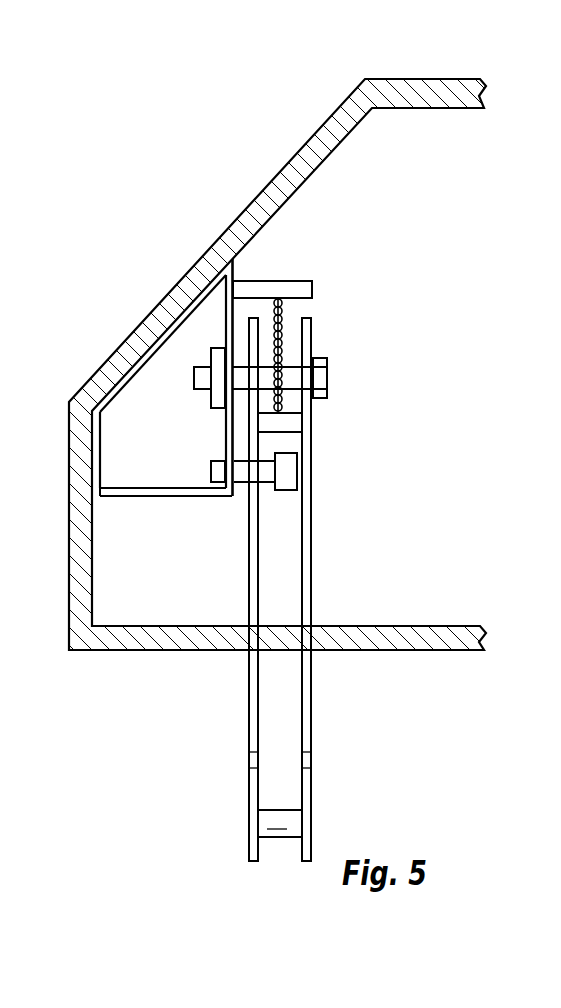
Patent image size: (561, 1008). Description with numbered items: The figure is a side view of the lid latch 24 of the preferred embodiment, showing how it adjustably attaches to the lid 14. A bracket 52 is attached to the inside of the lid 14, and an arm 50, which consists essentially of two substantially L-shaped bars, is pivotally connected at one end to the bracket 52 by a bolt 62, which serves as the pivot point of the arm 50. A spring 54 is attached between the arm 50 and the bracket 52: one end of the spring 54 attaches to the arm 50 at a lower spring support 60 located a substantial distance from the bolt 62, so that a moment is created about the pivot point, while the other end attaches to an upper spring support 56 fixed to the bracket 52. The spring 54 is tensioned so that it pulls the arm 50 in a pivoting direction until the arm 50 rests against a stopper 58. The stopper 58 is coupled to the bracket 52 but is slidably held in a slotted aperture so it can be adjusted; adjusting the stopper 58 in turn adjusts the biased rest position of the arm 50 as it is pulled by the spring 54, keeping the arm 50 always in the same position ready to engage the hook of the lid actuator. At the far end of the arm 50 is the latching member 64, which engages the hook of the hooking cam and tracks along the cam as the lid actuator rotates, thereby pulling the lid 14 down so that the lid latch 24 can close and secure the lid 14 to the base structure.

The lid 14 is at (440, 632).
The lid latch 24 is at (381, 207).
The arm 50 is at (305, 563).
The bracket 52 is at (150, 497).
The spring 54 is at (285, 322).
The upper spring support 56 is at (313, 287).
The stopper 58 is at (288, 470).
The lower spring support 60 is at (303, 422).
The bolt 62 is at (328, 377).
The latching member 64 is at (290, 818).